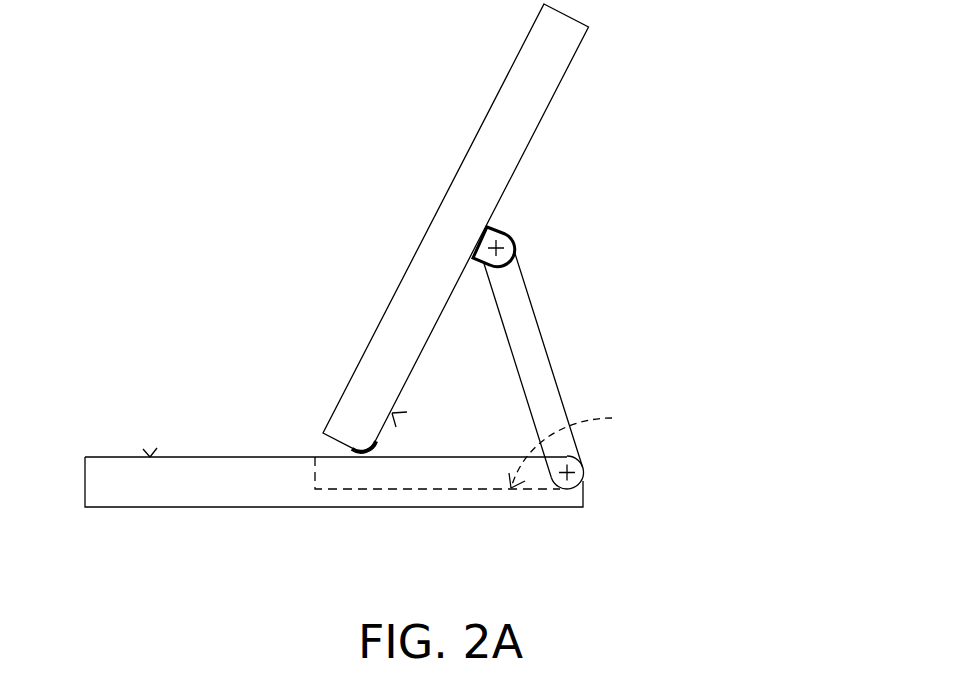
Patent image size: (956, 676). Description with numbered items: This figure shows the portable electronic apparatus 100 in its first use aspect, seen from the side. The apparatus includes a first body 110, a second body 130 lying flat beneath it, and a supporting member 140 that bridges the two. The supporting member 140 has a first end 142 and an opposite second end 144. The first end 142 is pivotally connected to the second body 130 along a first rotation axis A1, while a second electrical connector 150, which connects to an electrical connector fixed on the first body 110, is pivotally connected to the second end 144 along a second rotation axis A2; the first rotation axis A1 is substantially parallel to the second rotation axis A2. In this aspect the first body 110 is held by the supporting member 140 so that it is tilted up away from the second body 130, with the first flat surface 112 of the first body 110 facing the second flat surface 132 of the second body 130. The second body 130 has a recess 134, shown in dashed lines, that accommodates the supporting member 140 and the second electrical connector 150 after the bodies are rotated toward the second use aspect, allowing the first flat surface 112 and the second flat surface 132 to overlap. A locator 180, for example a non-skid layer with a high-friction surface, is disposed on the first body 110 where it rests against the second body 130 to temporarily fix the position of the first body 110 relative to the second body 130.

The portable electronic apparatus 100 is at (792, 520).
The first body 110 is at (518, 85).
The first flat surface 112 is at (392, 413).
The second body 130 is at (147, 500).
The second flat surface 132 is at (149, 456).
The recess 134 is at (584, 443).
The supporting member 140 is at (542, 363).
The first end 142 is at (581, 476).
The second end 144 is at (510, 271).
The second electrical connector 150 is at (490, 265).
The locator 180 is at (359, 457).
The first rotation axis A1 is at (563, 478).
The second rotation axis A2 is at (503, 238).